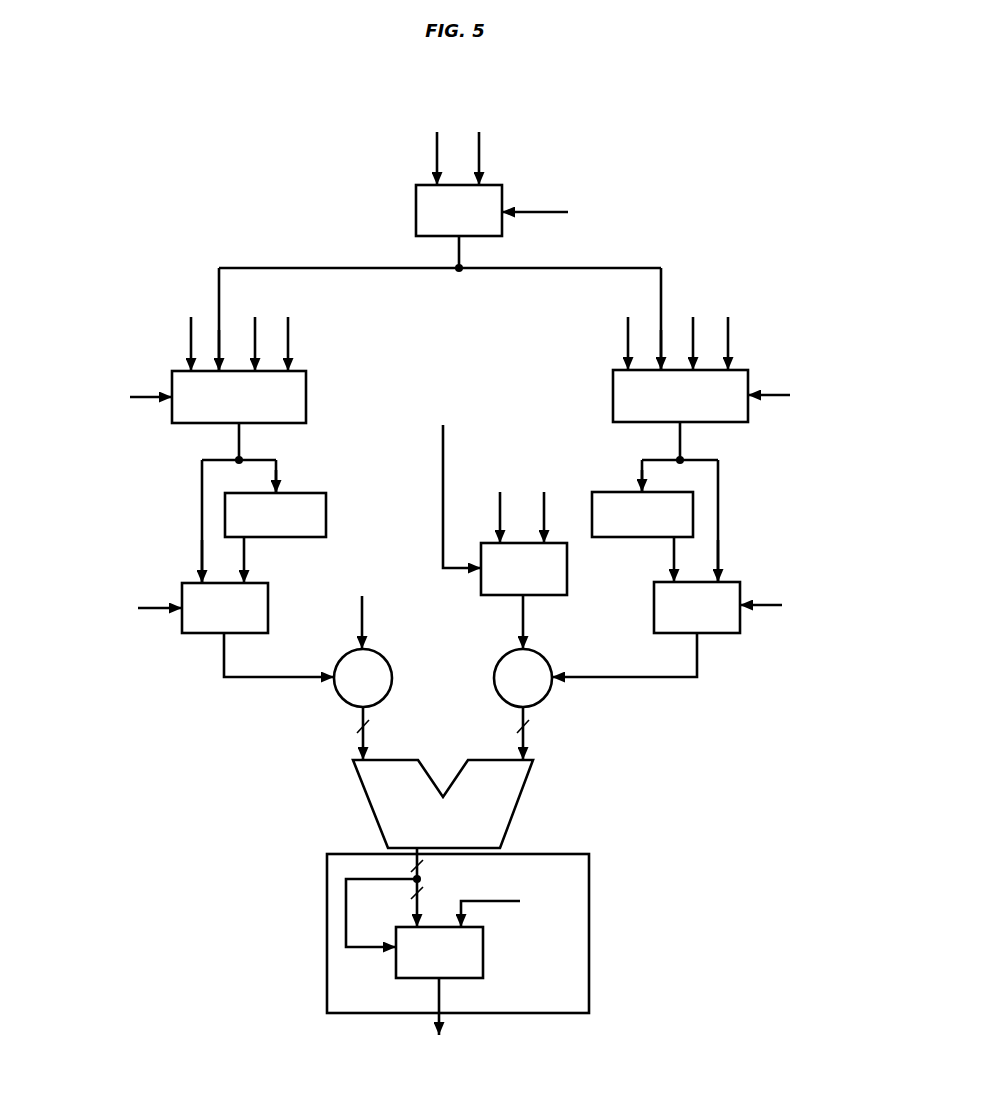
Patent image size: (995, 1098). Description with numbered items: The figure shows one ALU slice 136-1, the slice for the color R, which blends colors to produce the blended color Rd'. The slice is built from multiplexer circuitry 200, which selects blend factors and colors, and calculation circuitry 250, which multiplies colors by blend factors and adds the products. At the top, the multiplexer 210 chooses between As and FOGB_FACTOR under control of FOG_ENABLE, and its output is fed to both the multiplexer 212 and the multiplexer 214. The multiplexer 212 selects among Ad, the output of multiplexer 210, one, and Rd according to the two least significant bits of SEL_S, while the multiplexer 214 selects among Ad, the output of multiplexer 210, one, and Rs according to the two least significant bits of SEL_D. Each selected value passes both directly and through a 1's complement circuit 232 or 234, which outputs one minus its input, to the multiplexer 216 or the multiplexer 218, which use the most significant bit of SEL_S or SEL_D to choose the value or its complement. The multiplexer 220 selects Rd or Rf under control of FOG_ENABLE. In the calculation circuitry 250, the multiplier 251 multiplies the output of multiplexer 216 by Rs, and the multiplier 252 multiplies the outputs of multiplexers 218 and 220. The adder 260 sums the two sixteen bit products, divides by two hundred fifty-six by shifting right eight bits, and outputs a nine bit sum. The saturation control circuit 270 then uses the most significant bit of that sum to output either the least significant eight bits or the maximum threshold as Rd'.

The ALU slice 136-1 is at (251, 165).
The multiplexer circuitry 200 is at (186, 226).
The multiplexer 210 is at (416, 212).
The multiplexer 212 is at (306, 390).
The multiplexer 214 is at (613, 393).
The multiplexer 216 is at (182, 598).
The multiplexer 218 is at (654, 620).
The multiplexer 220 is at (481, 585).
The 1's complement circuit 232 is at (307, 493).
The 1's complement circuit 234 is at (607, 492).
The calculation circuitry 250 is at (178, 754).
The multiplier 251 is at (340, 695).
The multiplier 252 is at (550, 694).
The adder 260 is at (368, 810).
The saturation control circuit 270 is at (590, 898).